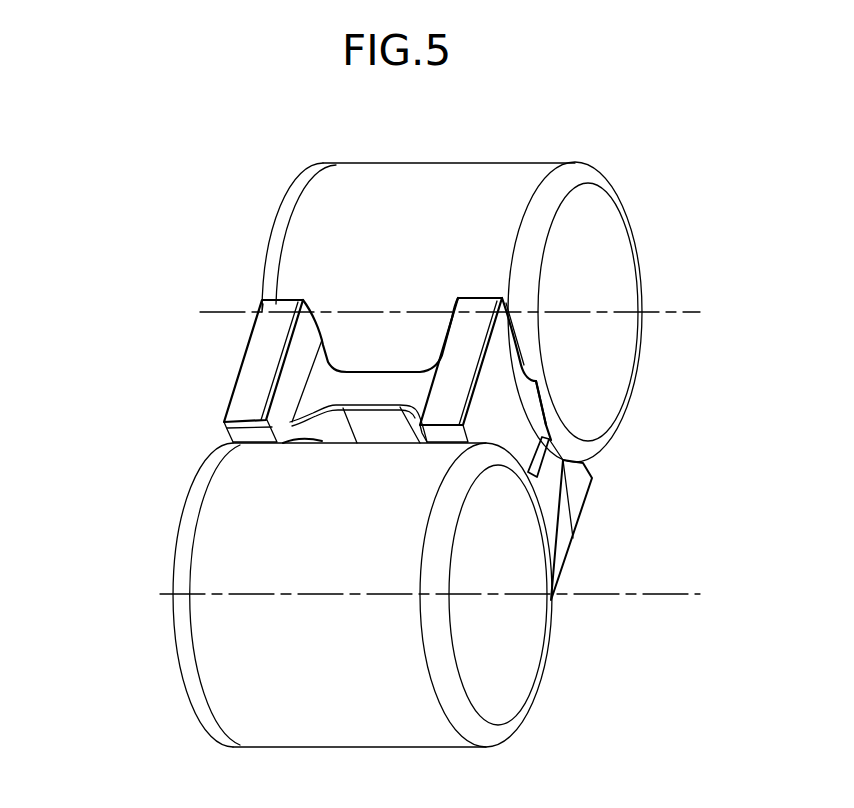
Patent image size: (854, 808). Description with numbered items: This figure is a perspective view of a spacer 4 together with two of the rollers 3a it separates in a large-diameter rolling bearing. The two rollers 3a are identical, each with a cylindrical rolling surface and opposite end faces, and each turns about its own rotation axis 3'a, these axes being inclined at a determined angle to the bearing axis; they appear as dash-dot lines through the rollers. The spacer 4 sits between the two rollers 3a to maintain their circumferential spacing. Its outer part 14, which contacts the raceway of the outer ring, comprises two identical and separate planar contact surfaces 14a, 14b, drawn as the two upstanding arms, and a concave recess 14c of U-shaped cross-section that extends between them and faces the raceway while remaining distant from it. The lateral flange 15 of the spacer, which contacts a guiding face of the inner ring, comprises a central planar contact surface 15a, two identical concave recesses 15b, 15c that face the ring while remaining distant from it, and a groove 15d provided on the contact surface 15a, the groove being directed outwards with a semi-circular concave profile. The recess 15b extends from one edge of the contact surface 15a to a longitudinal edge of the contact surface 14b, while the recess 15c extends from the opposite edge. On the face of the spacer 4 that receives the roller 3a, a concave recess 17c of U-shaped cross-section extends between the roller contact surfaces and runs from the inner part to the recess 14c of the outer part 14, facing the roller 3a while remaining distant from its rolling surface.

The roller 3a is at (272, 227).
The rotation axis of roller 3'a is at (430, 458).
The spacer 4 is at (133, 429).
The outer part 14 is at (467, 352).
The planar contact surface 14a is at (258, 371).
The planar contact surface 14b is at (471, 346).
The concave recess 14c is at (372, 392).
The concave recess 17c is at (378, 426).
The lateral flange 15 is at (530, 422).
The central planar contact surface 15a is at (553, 468).
The concave recess 15b is at (495, 365).
The concave recess 15c is at (568, 517).
The groove 15d is at (547, 415).